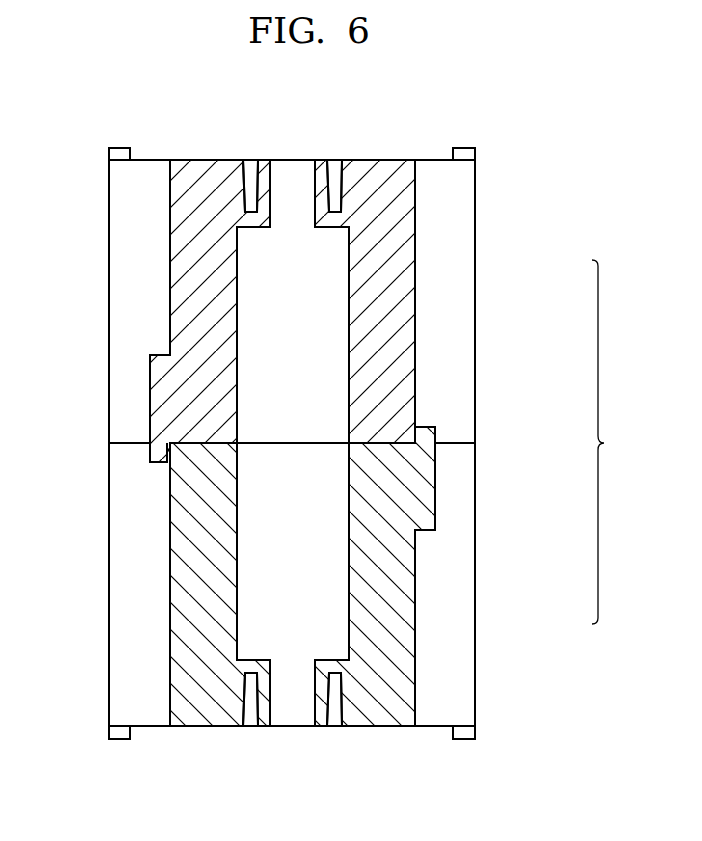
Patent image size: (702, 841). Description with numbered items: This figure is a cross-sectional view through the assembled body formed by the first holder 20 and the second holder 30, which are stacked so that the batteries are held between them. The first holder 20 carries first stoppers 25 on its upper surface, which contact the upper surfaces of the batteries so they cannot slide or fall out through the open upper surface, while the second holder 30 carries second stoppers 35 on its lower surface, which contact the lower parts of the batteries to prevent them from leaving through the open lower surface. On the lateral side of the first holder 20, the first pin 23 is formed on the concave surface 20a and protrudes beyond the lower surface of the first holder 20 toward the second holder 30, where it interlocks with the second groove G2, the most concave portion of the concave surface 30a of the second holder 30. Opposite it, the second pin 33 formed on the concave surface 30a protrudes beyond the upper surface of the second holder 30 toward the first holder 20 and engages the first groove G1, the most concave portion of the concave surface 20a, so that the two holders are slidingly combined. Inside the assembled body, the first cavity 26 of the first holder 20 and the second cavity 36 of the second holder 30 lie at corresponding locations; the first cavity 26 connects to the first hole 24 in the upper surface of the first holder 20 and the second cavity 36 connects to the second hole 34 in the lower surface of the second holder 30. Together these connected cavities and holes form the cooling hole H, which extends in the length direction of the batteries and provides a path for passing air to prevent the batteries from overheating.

The first holder 20 is at (486, 188).
The second holder 30 is at (487, 683).
The first stoppers 25 is at (121, 148).
The second stoppers 35 is at (121, 742).
The first hole 24 is at (293, 200).
The first cavity 26 is at (325, 362).
The first pin 23 is at (160, 398).
The concave surface 20a is at (416, 408).
The first groove G1 is at (416, 440).
The second pin 33 is at (428, 460).
The second groove G2 is at (167, 449).
The concave surface 30a is at (168, 503).
The second cavity 36 is at (325, 547).
The second hole 34 is at (290, 673).
The cooling hole H is at (608, 442).